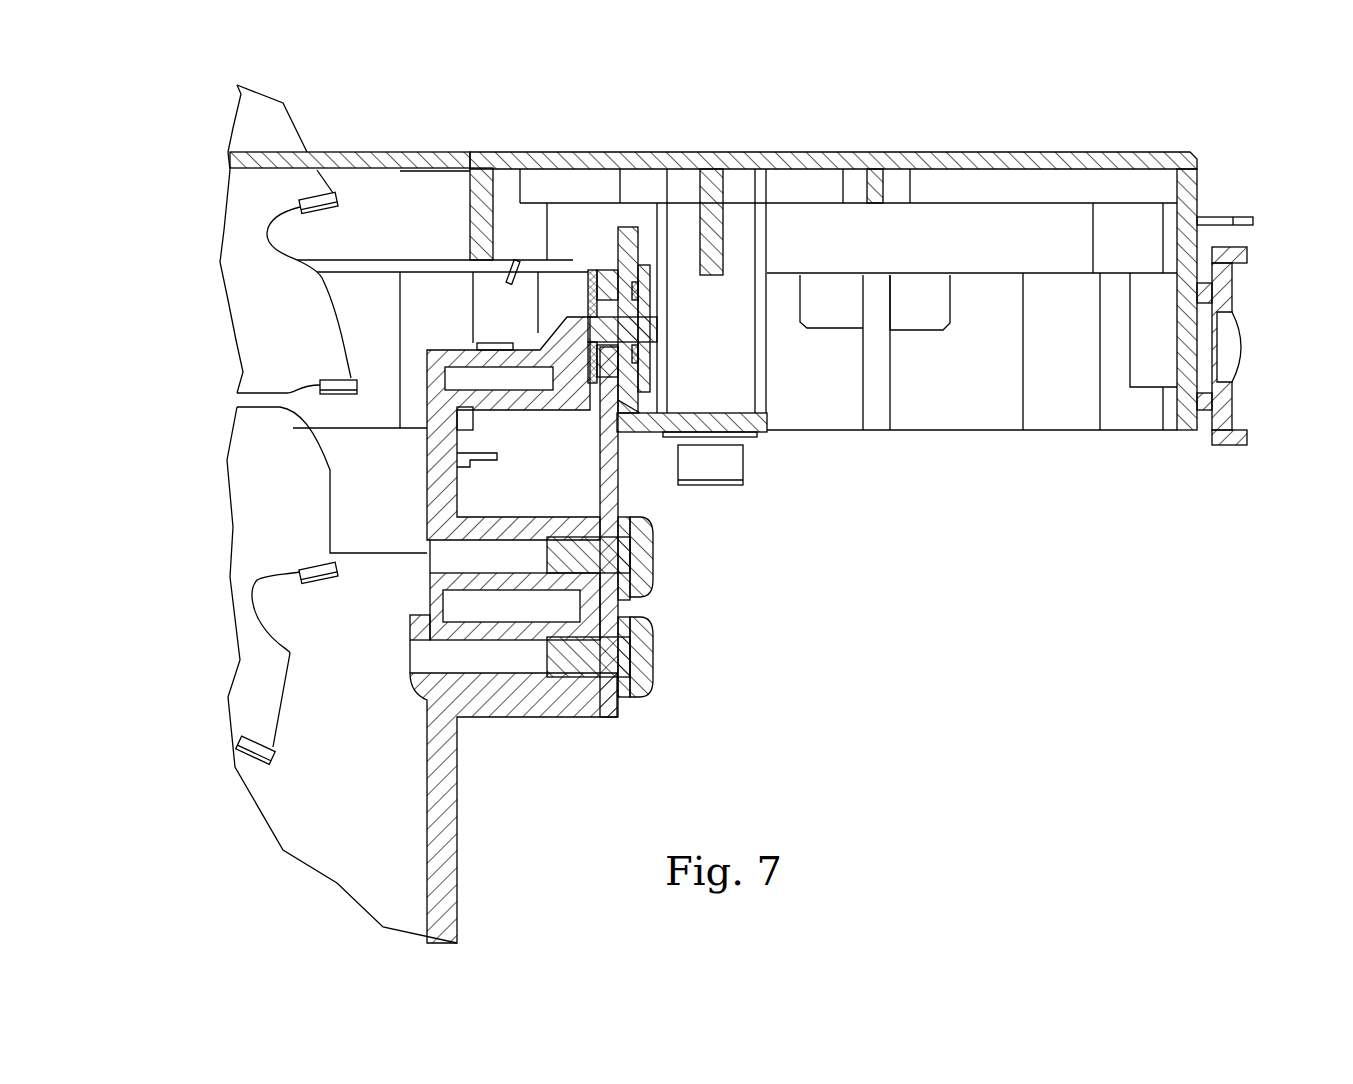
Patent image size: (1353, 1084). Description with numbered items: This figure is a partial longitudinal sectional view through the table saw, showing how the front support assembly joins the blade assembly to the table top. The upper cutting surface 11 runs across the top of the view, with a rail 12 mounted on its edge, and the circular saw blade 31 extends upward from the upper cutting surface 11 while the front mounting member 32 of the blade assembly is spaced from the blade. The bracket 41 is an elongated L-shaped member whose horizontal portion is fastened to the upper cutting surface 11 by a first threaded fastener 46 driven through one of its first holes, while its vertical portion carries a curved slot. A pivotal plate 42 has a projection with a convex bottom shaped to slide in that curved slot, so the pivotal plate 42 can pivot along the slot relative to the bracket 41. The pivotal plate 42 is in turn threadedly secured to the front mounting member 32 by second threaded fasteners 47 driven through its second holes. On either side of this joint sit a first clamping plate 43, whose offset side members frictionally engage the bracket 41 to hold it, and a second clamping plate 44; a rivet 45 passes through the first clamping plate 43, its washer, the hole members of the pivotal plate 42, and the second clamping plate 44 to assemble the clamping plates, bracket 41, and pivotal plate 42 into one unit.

The upper cutting surface 11 is at (815, 160).
The rail 12 is at (1228, 435).
The circular saw blade 31 is at (248, 322).
The front mounting member 32 is at (575, 705).
The bracket 41 is at (628, 227).
The pivotal plate 42 is at (622, 605).
The first clamping plate 43 is at (655, 330).
The second clamping plate 44 is at (592, 300).
The rivet 45 is at (683, 440).
The first threaded fastener 46 is at (728, 470).
The second threaded fastener 47 is at (600, 555).